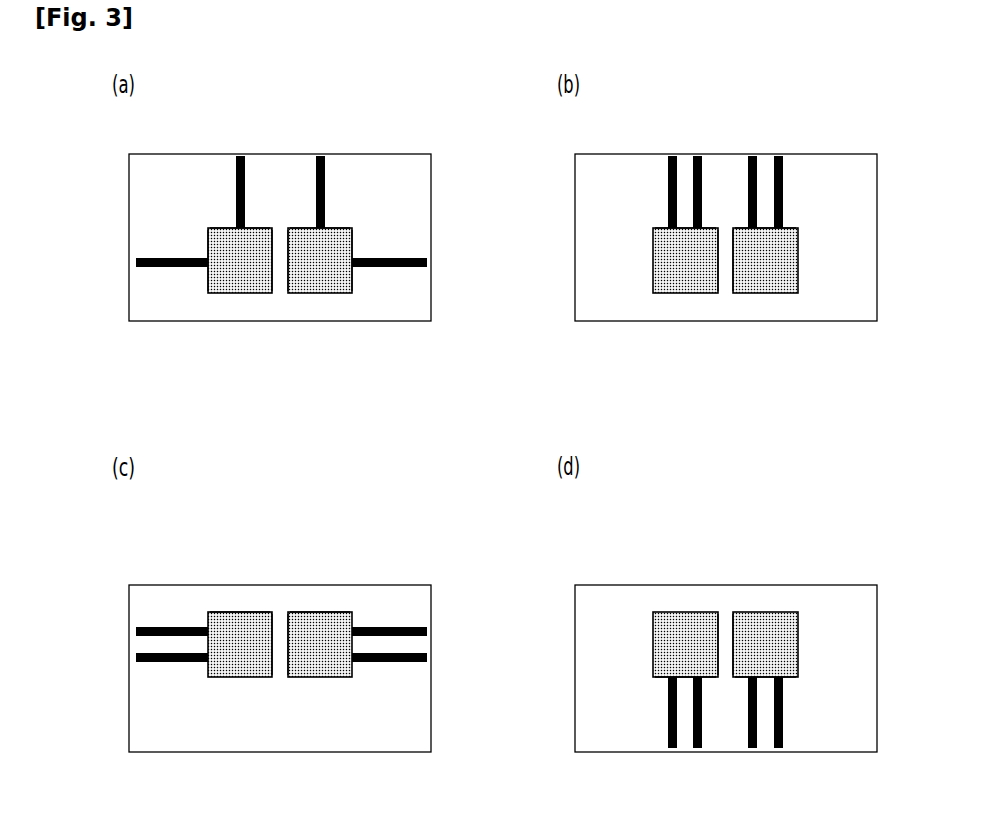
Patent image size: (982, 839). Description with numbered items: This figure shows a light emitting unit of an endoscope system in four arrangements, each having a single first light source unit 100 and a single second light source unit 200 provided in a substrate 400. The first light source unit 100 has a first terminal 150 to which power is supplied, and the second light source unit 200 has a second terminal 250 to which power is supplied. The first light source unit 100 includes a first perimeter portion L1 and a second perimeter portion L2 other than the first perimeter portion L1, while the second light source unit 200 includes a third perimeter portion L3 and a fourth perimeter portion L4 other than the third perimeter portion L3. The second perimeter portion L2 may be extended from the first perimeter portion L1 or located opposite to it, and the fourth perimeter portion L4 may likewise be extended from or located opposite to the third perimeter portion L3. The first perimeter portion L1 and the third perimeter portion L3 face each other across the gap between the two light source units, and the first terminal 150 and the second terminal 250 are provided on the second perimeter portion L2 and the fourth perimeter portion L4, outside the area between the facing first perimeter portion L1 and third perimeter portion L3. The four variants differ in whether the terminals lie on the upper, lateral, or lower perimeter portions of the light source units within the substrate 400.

The first light source unit 100 is at (227, 293).
The second light source unit 200 is at (338, 293).
The first terminal 150 is at (236, 207).
The second terminal 250 is at (325, 207).
The substrate 400 is at (421, 154).
The first perimeter portion L1 is at (273, 277).
The second perimeter portion L2 is at (260, 227).
The third perimeter portion L3 is at (288, 287).
The fourth perimeter portion L4 is at (302, 227).